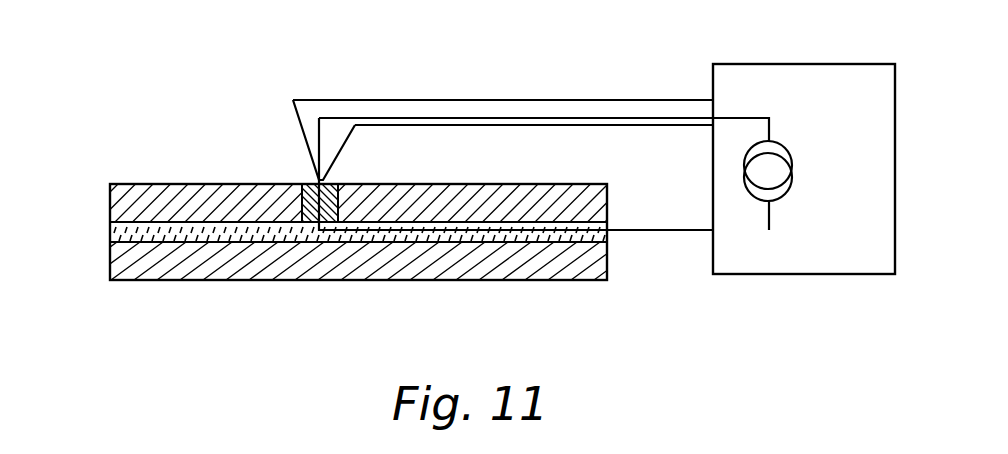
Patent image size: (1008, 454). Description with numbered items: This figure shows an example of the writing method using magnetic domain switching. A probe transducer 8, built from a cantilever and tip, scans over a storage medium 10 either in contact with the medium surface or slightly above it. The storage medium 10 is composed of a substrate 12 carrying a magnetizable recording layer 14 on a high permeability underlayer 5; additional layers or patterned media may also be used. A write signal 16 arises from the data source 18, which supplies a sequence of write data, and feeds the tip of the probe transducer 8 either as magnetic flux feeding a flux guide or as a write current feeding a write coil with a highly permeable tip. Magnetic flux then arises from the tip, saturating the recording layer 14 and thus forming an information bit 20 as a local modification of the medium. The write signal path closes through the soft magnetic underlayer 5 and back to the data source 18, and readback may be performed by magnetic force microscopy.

The storage medium 10 is at (318, 232).
The magnetizable recording layer 14 is at (588, 202).
The substrate 12 is at (492, 266).
The high permeability underlayer 5 is at (596, 224).
The information bit 20 is at (310, 203).
The probe transducer 8 is at (312, 113).
The write signal 16 is at (394, 105).
The data source 18 is at (863, 260).